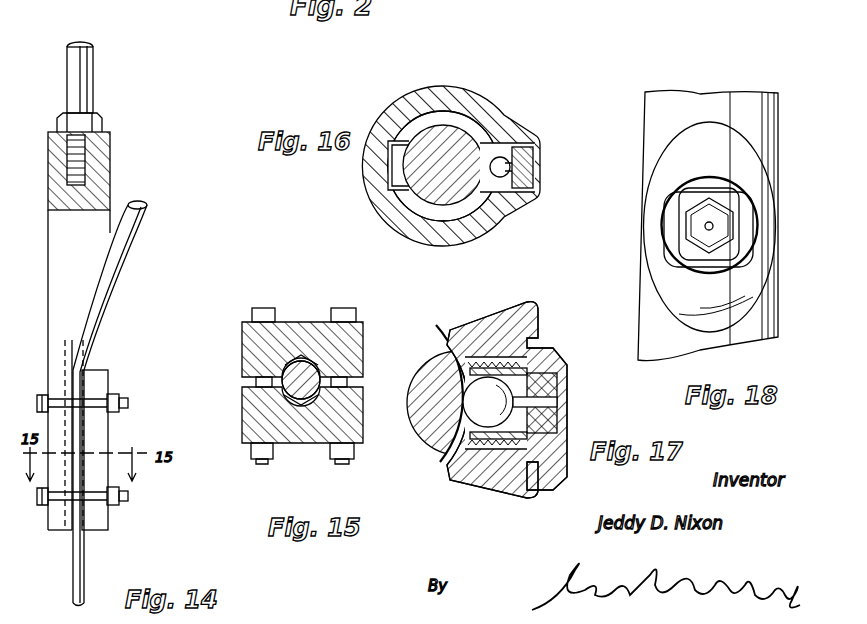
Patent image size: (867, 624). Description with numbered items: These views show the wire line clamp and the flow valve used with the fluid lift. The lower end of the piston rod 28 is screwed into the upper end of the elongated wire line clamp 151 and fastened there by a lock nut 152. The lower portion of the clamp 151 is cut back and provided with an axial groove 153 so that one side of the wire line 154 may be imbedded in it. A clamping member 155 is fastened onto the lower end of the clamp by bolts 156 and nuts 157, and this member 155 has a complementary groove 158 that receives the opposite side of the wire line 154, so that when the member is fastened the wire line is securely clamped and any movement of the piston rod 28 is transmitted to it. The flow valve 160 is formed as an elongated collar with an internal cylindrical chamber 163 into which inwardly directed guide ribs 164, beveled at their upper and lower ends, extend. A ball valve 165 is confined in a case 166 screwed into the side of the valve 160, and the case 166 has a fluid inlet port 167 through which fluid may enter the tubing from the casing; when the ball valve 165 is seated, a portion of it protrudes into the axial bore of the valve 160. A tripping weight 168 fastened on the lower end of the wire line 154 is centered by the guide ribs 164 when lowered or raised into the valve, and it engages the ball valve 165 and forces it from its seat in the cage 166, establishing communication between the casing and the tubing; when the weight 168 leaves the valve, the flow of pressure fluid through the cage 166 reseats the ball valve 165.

In FIG. 14, the piston rod 28 is at (80, 76).
In FIG. 14, the wire line clamp 151 is at (100, 197).
In FIG. 15, the wire line clamp 151 is at (305, 322).
In FIG. 14, the lock nut 152 is at (96, 128).
In FIG. 15, the axial groove 153 is at (320, 352).
In FIG. 14, the wire line 154 is at (128, 242).
In FIG. 15, the wire line 154 is at (308, 375).
In FIG. 14, the clamping member 155 is at (95, 380).
In FIG. 15, the clamping member 155 is at (300, 443).
In FIG. 14, the bolts 156 is at (128, 403).
In FIG. 15, the bolts 156 is at (265, 313).
In FIG. 14, the nuts 157 is at (112, 396).
In FIG. 15, the nuts 157 is at (250, 447).
In FIG. 15, the complementary groove 158 is at (300, 398).
In FIG. 16, the flow valve 160 is at (462, 90).
In FIG. 17, the flow valve 160 is at (472, 328).
In FIG. 18, the flow valve 160 is at (655, 114).
In FIG. 16, the internal cylindrical chamber 163 is at (425, 120).
In FIG. 17, the internal cylindrical chamber 163 is at (446, 470).
In FIG. 16, the guide ribs 164 is at (395, 190).
In FIG. 16, the ball valve 165 is at (505, 158).
In FIG. 17, the ball valve 165 is at (488, 412).
In FIG. 16, the case 166 is at (530, 180).
In FIG. 17, the case 166 is at (540, 362).
In FIG. 18, the case 166 is at (700, 228).
In FIG. 16, the fluid inlet port 167 is at (530, 165).
In FIG. 17, the fluid inlet port 167 is at (557, 402).
In FIG. 18, the fluid inlet port 167 is at (712, 226).
In FIG. 16, the tripping weight 168 is at (440, 135).
In FIG. 17, the tripping weight 168 is at (437, 392).